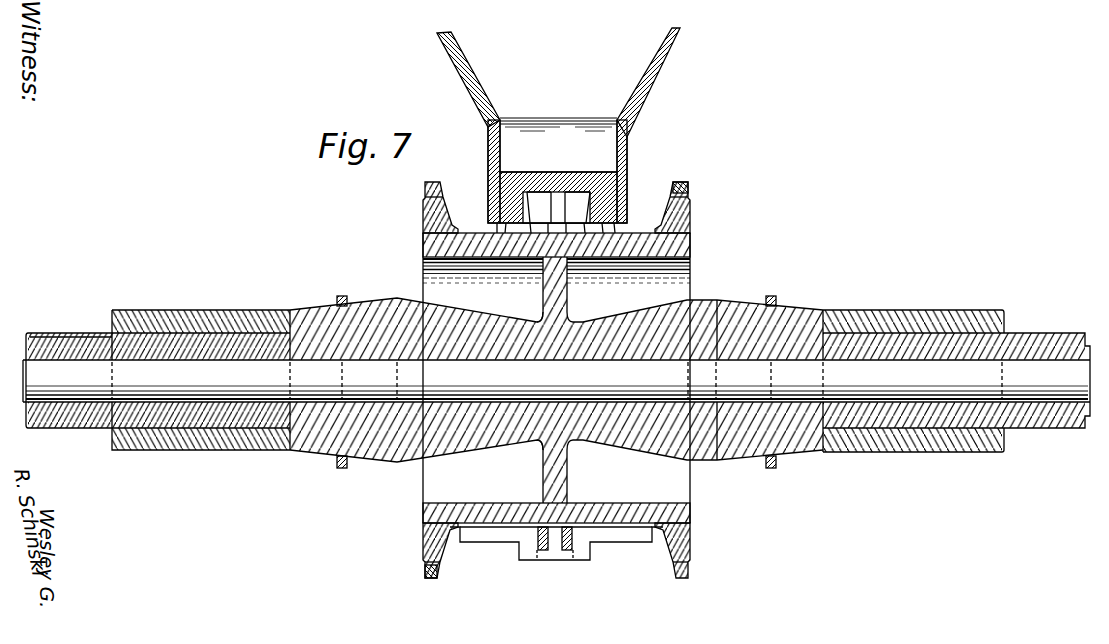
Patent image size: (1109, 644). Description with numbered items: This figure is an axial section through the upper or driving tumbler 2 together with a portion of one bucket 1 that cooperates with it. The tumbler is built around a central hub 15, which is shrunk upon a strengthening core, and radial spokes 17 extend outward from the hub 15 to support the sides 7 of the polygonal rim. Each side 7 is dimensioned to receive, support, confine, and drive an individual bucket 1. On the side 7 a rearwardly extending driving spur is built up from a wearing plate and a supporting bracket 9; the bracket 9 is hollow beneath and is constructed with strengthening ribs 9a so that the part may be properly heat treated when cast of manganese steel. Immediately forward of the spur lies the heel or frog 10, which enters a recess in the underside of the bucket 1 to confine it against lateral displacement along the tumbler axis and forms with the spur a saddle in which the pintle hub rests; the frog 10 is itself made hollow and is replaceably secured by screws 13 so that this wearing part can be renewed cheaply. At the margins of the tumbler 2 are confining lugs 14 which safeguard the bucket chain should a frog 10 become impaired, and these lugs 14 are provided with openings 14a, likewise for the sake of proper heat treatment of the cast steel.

The bucket 1 is at (644, 107).
The upper or driving tumbler 2 is at (691, 241).
The side of the polygonal rim 7 is at (424, 267).
The supporting bracket 9 is at (627, 172).
The strengthening ribs 9a is at (587, 222).
The heel or frog 10 is at (557, 563).
The screws 13 is at (423, 218).
The marginal confining lugs 14 is at (810, 311).
The openings 14a is at (672, 184).
The hub 15 is at (556, 381).
The radial spokes 17 is at (543, 288).